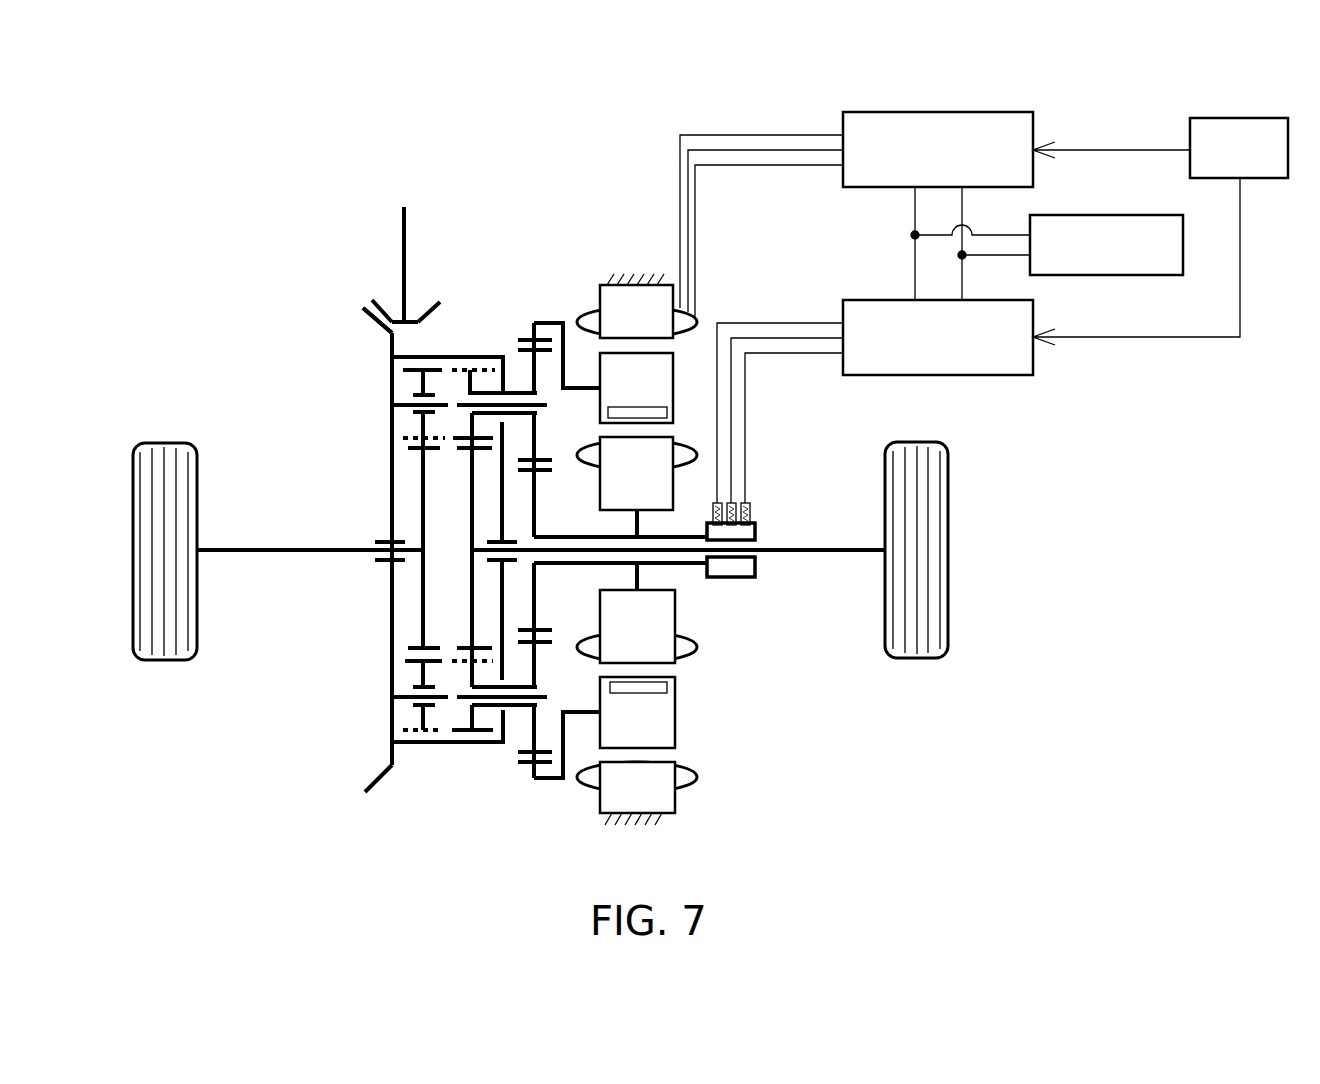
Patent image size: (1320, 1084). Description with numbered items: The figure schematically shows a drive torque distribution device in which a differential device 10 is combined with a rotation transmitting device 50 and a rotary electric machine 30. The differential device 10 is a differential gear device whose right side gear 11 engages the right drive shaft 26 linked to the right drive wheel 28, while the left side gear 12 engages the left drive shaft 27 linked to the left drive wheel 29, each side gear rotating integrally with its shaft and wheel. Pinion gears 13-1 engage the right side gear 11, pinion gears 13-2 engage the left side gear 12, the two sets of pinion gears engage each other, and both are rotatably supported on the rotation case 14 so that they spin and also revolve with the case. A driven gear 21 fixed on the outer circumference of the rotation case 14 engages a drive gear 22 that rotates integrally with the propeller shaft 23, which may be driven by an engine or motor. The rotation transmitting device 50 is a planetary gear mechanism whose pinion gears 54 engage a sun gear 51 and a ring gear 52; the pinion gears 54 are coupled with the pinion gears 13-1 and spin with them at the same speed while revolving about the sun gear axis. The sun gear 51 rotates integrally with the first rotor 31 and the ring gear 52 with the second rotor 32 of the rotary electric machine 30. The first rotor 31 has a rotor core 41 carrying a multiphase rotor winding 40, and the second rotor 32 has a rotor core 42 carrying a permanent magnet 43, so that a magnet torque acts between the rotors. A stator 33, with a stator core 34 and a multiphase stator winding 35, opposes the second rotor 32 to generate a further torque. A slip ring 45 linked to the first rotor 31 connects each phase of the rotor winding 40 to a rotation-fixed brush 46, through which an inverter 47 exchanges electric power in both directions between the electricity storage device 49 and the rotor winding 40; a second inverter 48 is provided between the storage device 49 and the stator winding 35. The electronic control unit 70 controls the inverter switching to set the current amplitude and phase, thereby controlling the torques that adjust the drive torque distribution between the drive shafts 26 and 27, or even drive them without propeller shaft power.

The differential device 10 is at (422, 763).
The side gear 11 is at (470, 500).
The side gear 12 is at (420, 495).
The pinion gears 13-1 is at (460, 432).
The pinion gears 13-2 is at (405, 378).
The rotation case 14 is at (447, 357).
The driven gear 21 is at (370, 318).
The drive gear 22 is at (378, 298).
The propeller shaft 23 is at (402, 222).
The drive shaft 26 is at (852, 552).
The drive shaft 27 is at (237, 553).
The drive wheel 28 is at (925, 660).
The drive wheel 29 is at (155, 662).
The rotary electric machine 30 is at (628, 843).
The first rotor 31 is at (600, 497).
The second rotor 32 is at (600, 400).
The stator 33 is at (600, 282).
The stator core 34 is at (657, 805).
The stator winding 35 is at (683, 778).
The rotor winding 40 is at (685, 650).
The rotor core 41 is at (662, 615).
The rotor core 42 is at (658, 722).
The permanent magnet 43 is at (657, 687).
The slip ring 45 is at (750, 510).
The brush 46 is at (755, 530).
The inverter 47 is at (1033, 367).
The inverter 48 is at (843, 115).
The electricity storage device 49 is at (1112, 275).
The rotation transmitting device 50 is at (530, 793).
The sun gear 51 is at (552, 470).
The ring gear 52 is at (522, 338).
The pinion gears 54 is at (517, 352).
The electronic control unit 70 is at (1190, 125).